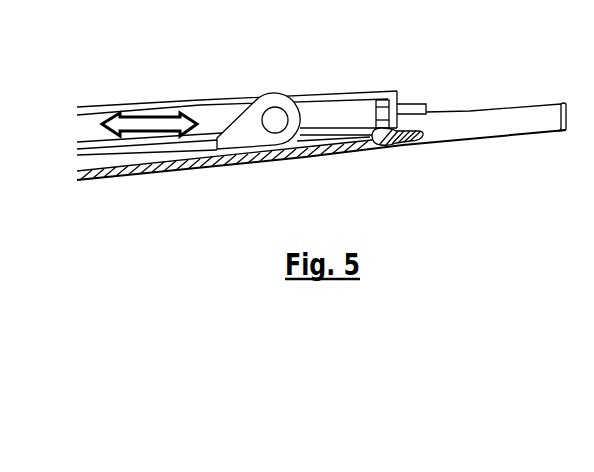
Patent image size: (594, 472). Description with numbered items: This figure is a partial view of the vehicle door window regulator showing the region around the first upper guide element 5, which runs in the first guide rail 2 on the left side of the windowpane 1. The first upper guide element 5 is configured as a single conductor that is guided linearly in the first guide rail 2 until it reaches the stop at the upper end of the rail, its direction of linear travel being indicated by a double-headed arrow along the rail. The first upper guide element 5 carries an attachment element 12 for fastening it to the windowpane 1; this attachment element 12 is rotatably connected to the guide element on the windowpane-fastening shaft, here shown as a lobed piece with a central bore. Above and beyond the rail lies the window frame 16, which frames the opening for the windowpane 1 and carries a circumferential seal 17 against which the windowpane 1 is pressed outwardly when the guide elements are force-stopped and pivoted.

The windowpane 1 is at (204, 167).
The first guide rail 2 is at (119, 98).
The first upper guide element 5 is at (332, 112).
The attachment element 12 is at (249, 141).
The window frame 16 is at (467, 156).
The circumferential seal 17 is at (407, 152).